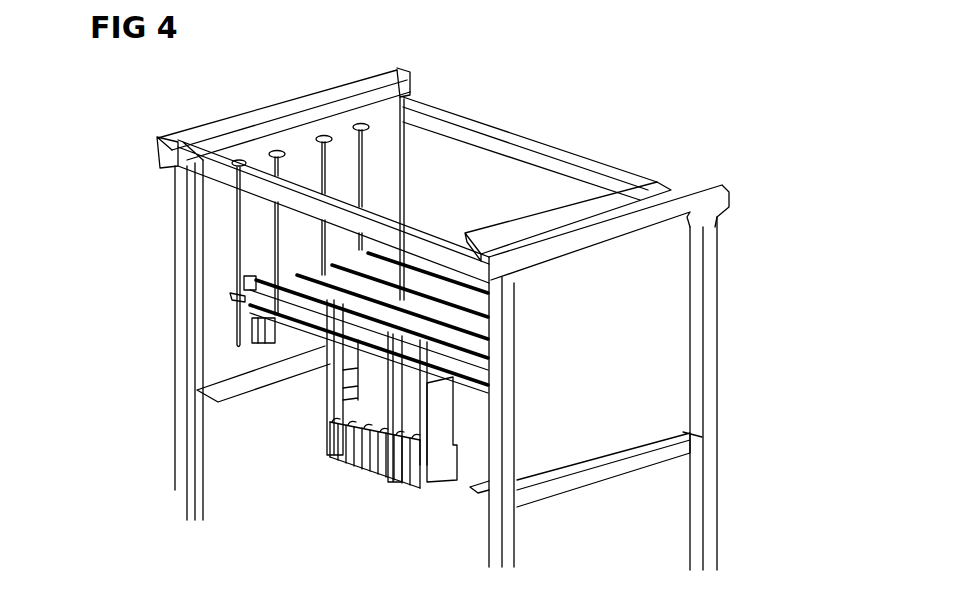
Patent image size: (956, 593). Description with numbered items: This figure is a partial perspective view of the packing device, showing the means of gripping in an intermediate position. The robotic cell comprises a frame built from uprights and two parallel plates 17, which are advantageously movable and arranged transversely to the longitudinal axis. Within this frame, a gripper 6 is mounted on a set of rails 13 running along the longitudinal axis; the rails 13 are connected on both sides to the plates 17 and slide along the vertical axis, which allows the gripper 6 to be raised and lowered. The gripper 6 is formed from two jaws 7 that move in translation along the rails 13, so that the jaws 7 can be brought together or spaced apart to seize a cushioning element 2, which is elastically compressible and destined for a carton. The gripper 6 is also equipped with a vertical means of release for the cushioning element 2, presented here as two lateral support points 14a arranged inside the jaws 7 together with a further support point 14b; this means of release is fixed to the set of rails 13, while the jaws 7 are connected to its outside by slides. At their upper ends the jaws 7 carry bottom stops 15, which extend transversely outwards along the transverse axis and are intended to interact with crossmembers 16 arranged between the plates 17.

The cushioning element 2 is at (360, 468).
The gripper 6 is at (445, 495).
The jaws 7 is at (430, 486).
The set of rails 13 is at (252, 277).
The lateral support points 14a is at (382, 398).
The support point 14b is at (332, 424).
The bottom stops 15 is at (252, 323).
The crossmembers 16 is at (232, 296).
The plates 17 is at (655, 379).